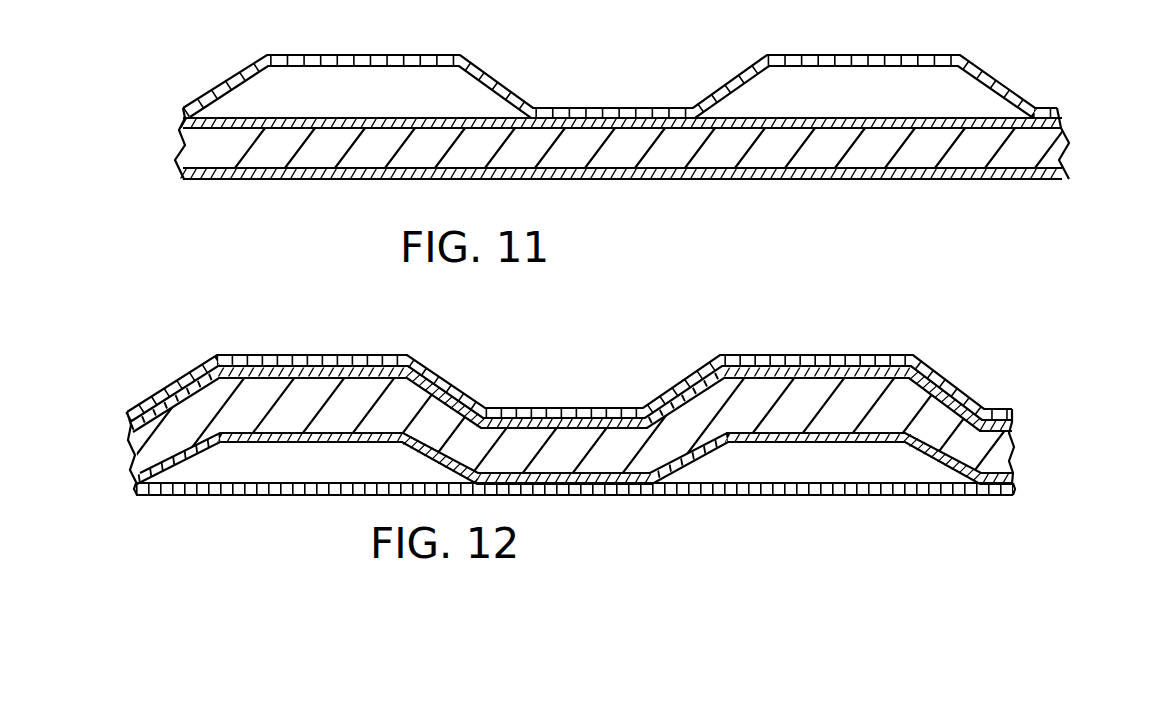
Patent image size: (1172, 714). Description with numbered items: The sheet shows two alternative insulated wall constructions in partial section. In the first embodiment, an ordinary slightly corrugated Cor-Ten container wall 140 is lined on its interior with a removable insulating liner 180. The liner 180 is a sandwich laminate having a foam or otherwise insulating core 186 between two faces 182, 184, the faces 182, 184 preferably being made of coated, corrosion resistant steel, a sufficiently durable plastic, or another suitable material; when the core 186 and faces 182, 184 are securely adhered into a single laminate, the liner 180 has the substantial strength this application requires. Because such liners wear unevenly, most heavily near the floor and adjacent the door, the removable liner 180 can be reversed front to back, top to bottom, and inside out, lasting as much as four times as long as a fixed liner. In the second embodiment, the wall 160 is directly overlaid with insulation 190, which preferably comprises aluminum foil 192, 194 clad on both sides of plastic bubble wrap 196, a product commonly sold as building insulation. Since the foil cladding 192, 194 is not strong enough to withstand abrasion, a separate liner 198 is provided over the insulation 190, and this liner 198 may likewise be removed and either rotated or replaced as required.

In FIG. 11, the corrugated layer 140 is at (808, 47).
In FIG. 11, the removable insulating liner 180 is at (657, 123).
In FIG. 11, the face 182 is at (833, 117).
In FIG. 11, the face 184 is at (899, 179).
In FIG. 11, the insulating core 186 is at (1059, 158).
In FIG. 12, the wall 160 is at (950, 381).
In FIG. 12, the insulation 190 is at (610, 416).
In FIG. 12, the aluminum foil 192 is at (1015, 422).
In FIG. 12, the aluminum foil 194 is at (1013, 478).
In FIG. 12, the plastic bubble wrap 196 is at (1003, 458).
In FIG. 12, the liner 198 is at (987, 494).